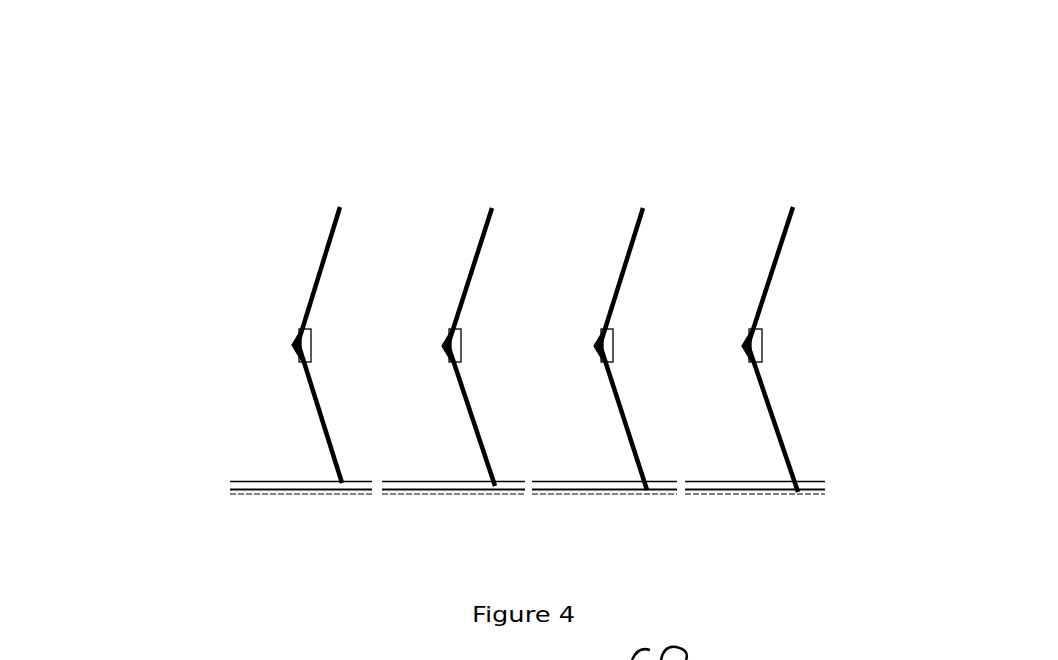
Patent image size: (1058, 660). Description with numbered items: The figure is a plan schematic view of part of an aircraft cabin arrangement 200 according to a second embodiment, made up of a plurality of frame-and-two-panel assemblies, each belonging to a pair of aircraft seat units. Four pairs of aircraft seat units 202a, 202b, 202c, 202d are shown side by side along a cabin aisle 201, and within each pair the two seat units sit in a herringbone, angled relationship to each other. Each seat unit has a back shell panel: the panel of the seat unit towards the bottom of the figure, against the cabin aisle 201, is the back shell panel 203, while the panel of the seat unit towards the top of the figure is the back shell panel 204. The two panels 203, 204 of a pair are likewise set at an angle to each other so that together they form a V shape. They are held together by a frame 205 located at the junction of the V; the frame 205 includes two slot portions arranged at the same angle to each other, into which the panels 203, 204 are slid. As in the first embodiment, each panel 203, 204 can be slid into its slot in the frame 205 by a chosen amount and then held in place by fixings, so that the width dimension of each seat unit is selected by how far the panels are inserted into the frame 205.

The aircraft cabin arrangement 200 is at (783, 97).
The cabin aisle 201 is at (735, 492).
The first pair of aircraft seat units 202a is at (337, 166).
The second pair of aircraft seat units 202b is at (499, 178).
The third pair of aircraft seat units 202c is at (643, 185).
The fourth pair of aircraft seat units 202d is at (815, 193).
The back shell panel 203 is at (317, 415).
The back shell panel 204 is at (323, 257).
The frame 205 is at (297, 343).